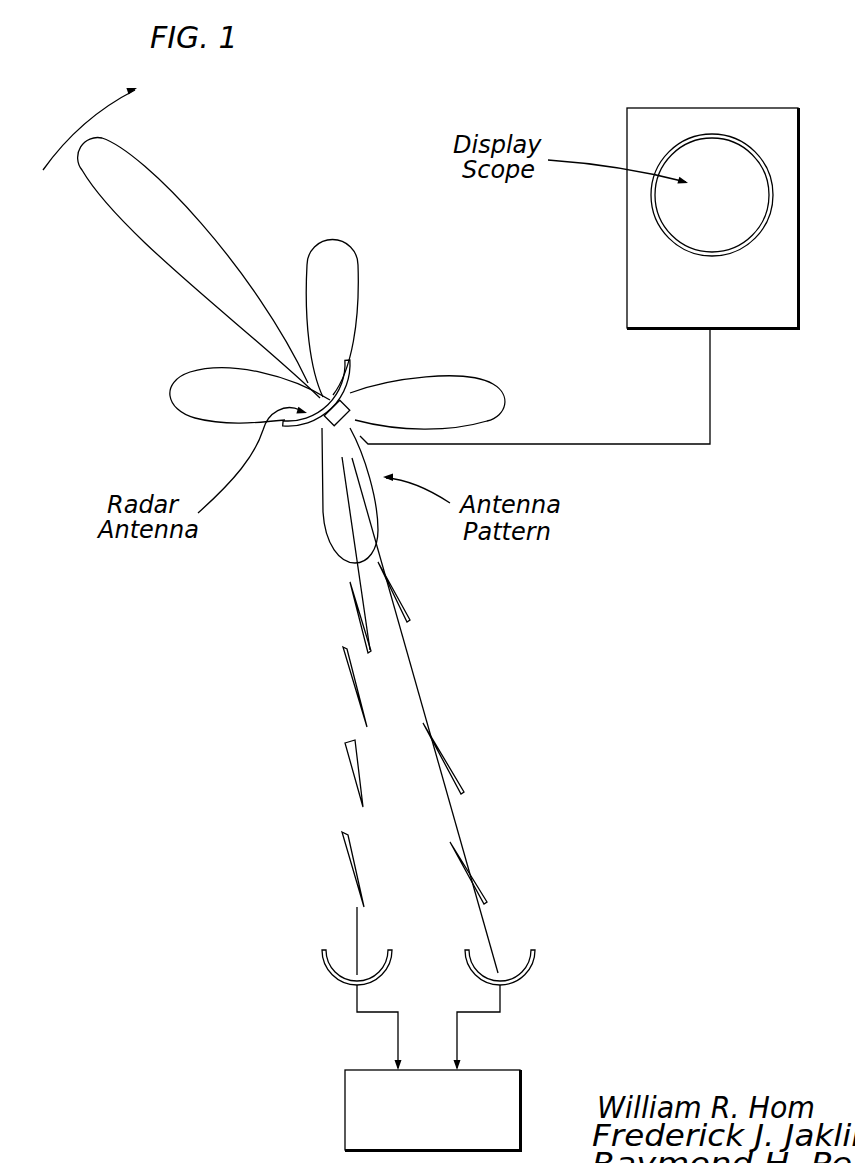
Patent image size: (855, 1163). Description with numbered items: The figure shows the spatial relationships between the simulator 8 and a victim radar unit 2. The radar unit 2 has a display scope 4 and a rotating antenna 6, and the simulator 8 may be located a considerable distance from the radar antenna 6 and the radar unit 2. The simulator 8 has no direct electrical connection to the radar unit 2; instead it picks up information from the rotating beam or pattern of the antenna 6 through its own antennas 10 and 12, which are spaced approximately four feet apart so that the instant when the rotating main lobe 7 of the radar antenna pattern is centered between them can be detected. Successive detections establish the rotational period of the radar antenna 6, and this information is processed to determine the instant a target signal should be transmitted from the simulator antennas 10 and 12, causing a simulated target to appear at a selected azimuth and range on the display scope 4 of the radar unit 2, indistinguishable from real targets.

The radar unit 2 is at (798, 241).
The display scope 4 is at (755, 170).
The rotating antenna 6 is at (347, 367).
The main lobe 7 is at (205, 225).
The simulator 8 is at (525, 1067).
The simulator antenna 10 is at (330, 955).
The simulator antenna 12 is at (521, 960).